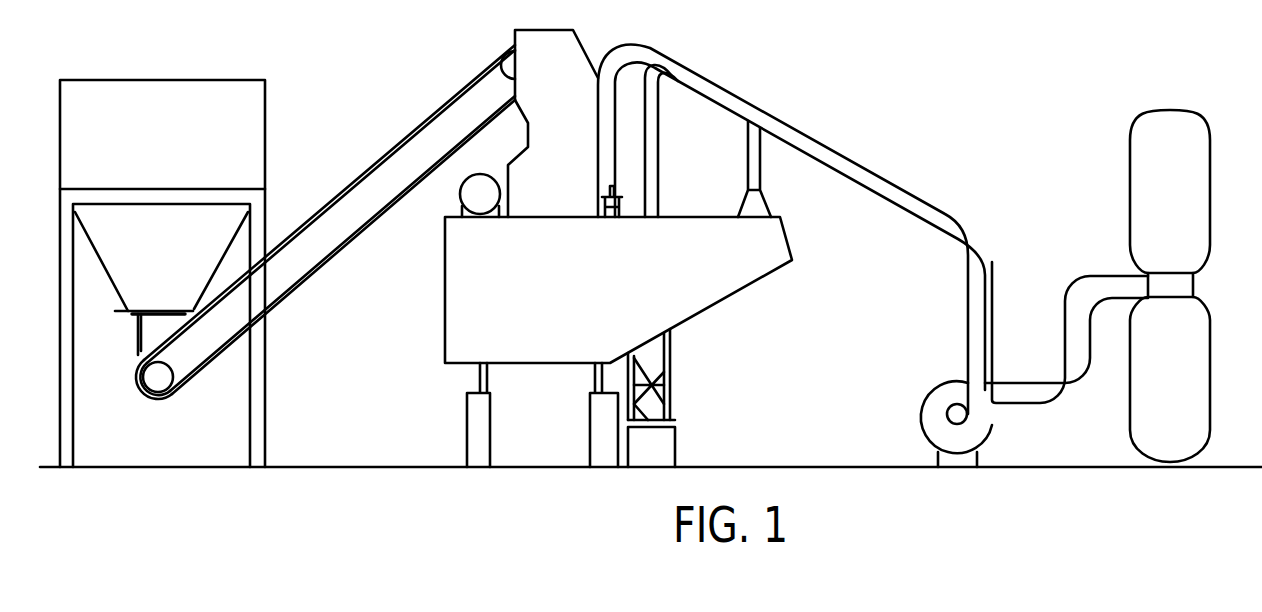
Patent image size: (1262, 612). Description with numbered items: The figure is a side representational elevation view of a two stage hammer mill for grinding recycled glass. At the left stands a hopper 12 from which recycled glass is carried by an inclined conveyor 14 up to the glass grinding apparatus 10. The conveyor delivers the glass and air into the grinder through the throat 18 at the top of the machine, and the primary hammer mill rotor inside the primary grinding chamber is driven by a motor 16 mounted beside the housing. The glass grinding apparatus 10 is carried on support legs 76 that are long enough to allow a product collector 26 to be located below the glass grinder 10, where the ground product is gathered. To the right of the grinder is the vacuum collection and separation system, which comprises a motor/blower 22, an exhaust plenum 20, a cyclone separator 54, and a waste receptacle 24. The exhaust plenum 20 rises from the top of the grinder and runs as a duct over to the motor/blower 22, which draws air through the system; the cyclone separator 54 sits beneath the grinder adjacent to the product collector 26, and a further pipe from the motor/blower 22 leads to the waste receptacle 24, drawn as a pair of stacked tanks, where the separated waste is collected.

The glass grinding apparatus 10 is at (595, 297).
The hopper 12 is at (168, 168).
The conveyor 14 is at (378, 214).
The motor 16 is at (467, 199).
The throat 18 is at (515, 34).
The exhaust plenum 20 is at (858, 165).
The motor/blower 22 is at (922, 404).
The waste receptacle 24 is at (1211, 366).
The product collector 26 is at (678, 448).
The cyclone separator 54 is at (671, 365).
The support legs 76 is at (488, 383).